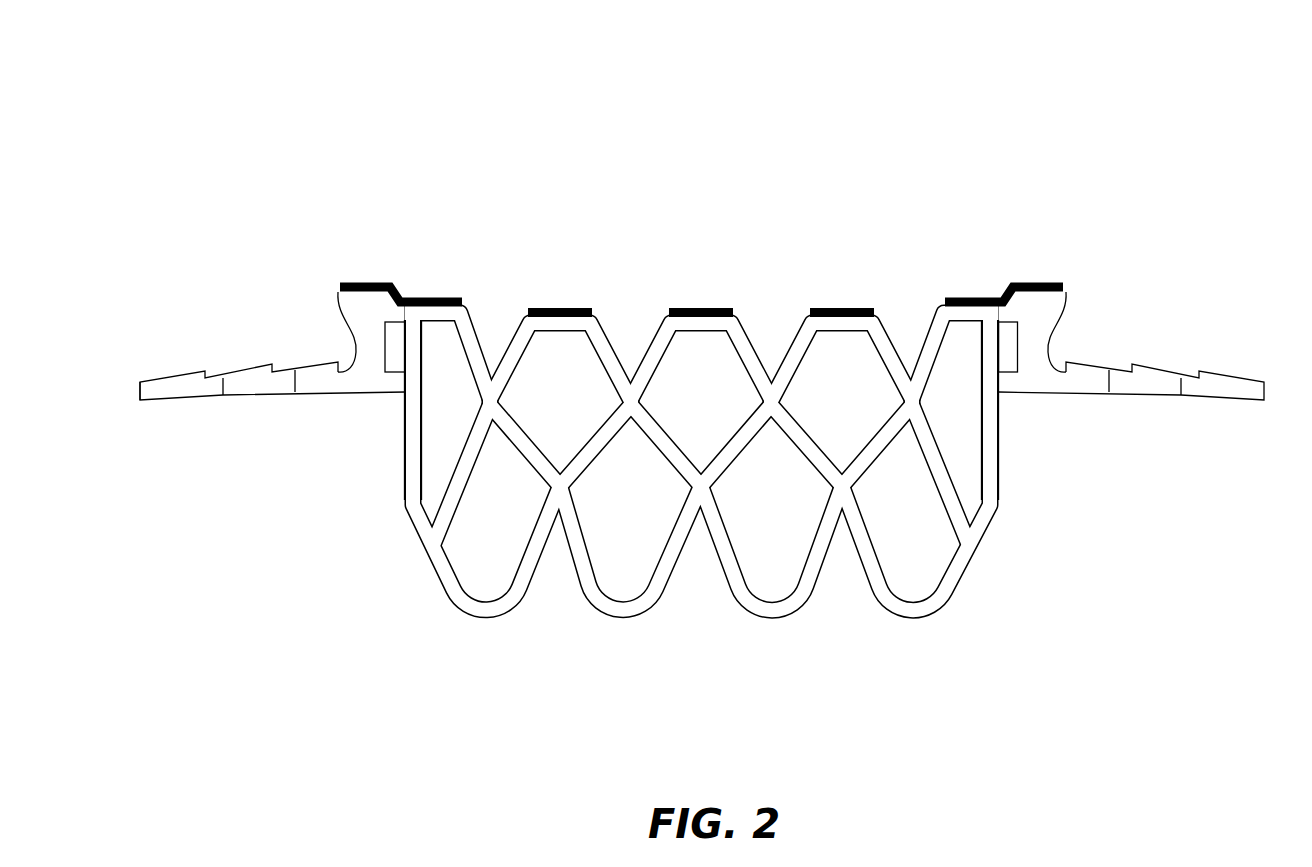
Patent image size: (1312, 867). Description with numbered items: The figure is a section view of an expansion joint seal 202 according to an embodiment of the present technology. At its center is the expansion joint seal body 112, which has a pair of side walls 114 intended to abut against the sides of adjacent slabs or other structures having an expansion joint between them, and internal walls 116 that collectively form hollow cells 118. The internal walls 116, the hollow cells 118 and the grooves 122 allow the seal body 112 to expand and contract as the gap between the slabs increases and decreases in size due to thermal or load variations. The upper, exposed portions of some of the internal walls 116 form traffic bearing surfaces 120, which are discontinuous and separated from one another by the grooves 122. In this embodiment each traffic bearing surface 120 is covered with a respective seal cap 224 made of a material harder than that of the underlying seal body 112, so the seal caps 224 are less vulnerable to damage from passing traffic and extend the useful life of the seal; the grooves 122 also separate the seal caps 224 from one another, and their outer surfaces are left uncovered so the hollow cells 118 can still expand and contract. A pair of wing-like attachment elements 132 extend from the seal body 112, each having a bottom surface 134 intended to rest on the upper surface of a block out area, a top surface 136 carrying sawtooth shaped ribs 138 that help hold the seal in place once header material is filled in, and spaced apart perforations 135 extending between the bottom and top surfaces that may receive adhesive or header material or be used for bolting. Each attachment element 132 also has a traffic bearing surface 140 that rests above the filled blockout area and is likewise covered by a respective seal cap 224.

The expansion joint seal 202 is at (446, 116).
The expansion joint seal body 112 is at (995, 700).
The side walls 114 is at (404, 482).
The internal walls 116 is at (648, 425).
The hollow cells 118 is at (440, 423).
The traffic bearing surfaces 120 is at (943, 300).
The grooves 122 is at (492, 329).
The seal cap 224 is at (441, 296).
The attachment elements 132 is at (143, 270).
The bottom surface 134 is at (188, 398).
The perforations 135 is at (268, 388).
The top surface 136 is at (186, 368).
The sawtooth shaped ribs 138 is at (337, 368).
The traffic bearing surface 140 is at (341, 296).